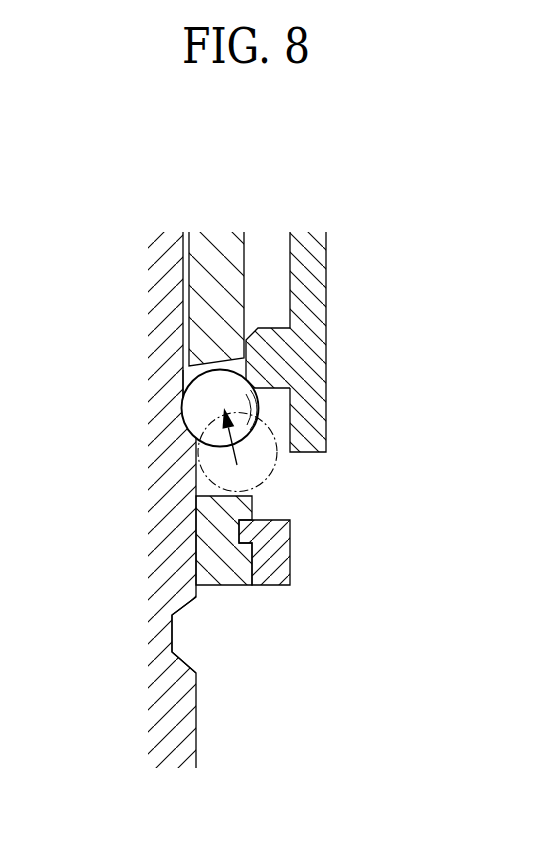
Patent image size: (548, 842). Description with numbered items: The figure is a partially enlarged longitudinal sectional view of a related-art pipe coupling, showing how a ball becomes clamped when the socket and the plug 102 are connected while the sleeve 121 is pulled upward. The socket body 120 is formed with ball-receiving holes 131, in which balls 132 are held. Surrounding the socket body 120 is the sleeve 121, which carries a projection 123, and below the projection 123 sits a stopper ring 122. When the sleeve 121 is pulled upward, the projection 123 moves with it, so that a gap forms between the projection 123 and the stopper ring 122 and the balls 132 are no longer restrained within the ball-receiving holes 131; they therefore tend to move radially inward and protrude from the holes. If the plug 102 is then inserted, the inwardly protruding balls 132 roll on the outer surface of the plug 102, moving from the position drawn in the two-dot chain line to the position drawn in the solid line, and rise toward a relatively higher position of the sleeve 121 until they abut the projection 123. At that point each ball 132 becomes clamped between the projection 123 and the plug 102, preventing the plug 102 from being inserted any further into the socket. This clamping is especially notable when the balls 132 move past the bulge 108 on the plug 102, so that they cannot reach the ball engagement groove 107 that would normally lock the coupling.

The plug 102 is at (218, 762).
The ball engagement groove 107 is at (173, 638).
The bulge 108 is at (197, 483).
The socket body 120 is at (213, 248).
The sleeve 121 is at (327, 265).
The stopper ring 122 is at (290, 540).
The projection 123 is at (270, 358).
The ball-receiving holes 131 is at (188, 372).
The balls 132 is at (212, 392).